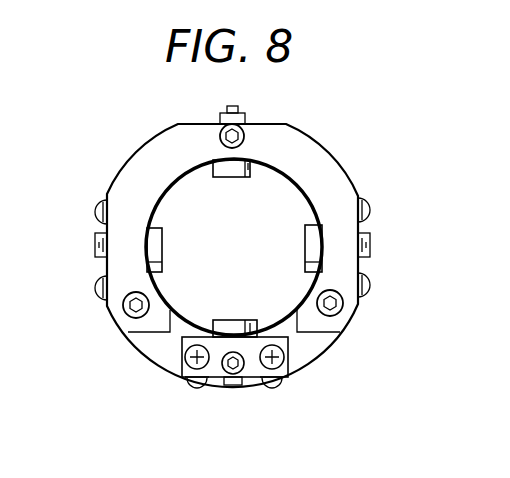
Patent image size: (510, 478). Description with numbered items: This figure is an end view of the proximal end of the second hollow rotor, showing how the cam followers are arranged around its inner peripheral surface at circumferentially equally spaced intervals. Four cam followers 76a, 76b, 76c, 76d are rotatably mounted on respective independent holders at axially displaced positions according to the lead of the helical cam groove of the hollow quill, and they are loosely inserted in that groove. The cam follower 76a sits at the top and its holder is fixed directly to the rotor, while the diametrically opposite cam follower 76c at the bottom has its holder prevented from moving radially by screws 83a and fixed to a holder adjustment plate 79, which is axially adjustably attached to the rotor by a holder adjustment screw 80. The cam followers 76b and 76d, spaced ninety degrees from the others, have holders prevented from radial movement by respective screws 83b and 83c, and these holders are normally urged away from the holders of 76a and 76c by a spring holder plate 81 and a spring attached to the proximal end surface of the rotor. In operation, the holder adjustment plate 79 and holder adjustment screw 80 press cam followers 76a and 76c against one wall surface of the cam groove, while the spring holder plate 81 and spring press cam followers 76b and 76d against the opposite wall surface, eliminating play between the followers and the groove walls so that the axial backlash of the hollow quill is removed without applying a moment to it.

The spring holder plate 81 is at (316, 151).
The cam follower 76a is at (252, 178).
The cam follower 76b is at (305, 247).
The cam follower 76c is at (231, 320).
The cam follower 76d is at (163, 245).
The holder adjustment plate 79 is at (257, 383).
The holder adjustment screw 80 is at (220, 381).
The screws 83a is at (192, 381).
The screw 83b is at (373, 272).
The screw 83c is at (95, 282).